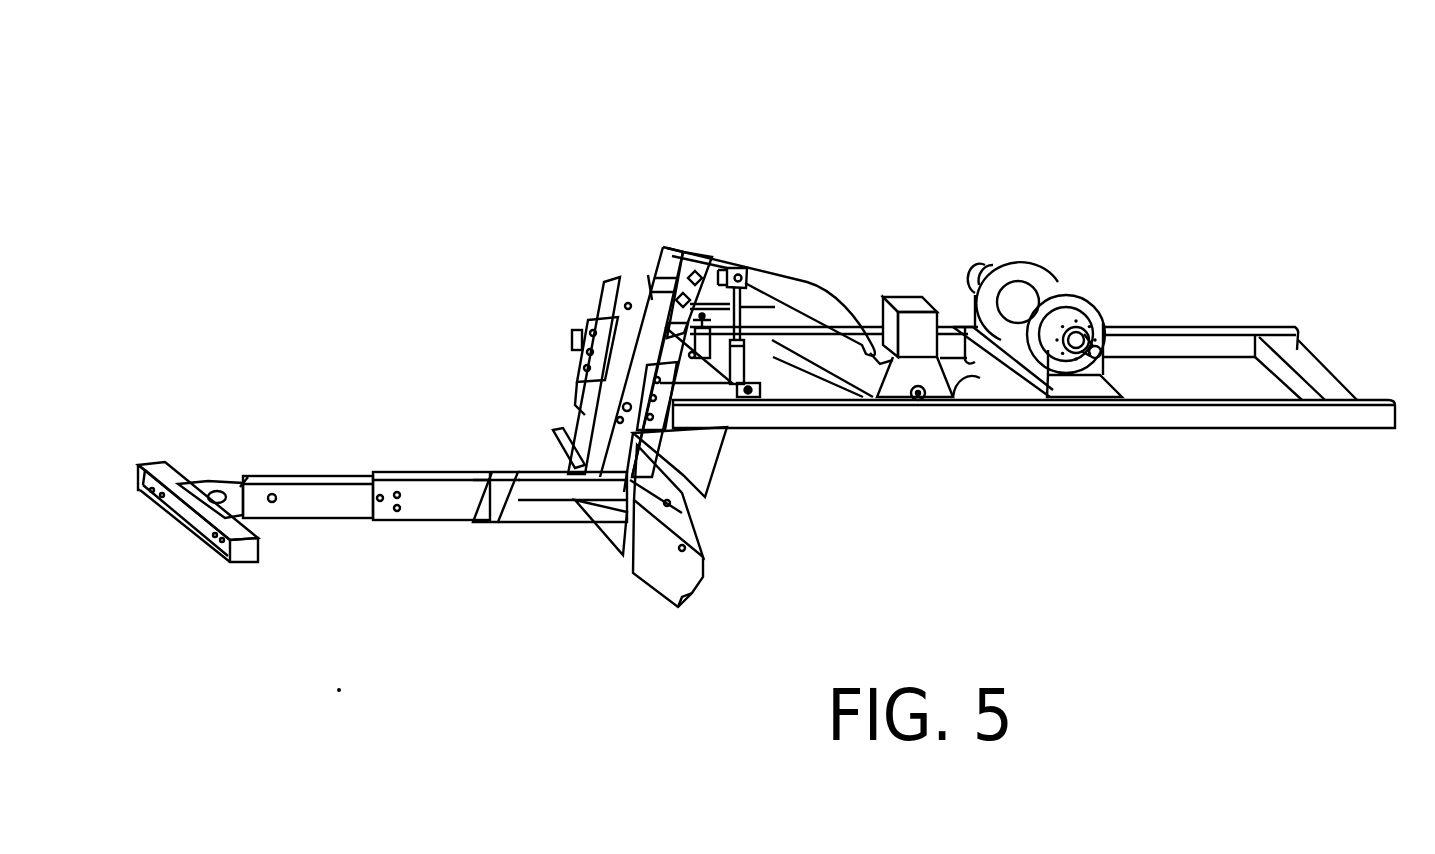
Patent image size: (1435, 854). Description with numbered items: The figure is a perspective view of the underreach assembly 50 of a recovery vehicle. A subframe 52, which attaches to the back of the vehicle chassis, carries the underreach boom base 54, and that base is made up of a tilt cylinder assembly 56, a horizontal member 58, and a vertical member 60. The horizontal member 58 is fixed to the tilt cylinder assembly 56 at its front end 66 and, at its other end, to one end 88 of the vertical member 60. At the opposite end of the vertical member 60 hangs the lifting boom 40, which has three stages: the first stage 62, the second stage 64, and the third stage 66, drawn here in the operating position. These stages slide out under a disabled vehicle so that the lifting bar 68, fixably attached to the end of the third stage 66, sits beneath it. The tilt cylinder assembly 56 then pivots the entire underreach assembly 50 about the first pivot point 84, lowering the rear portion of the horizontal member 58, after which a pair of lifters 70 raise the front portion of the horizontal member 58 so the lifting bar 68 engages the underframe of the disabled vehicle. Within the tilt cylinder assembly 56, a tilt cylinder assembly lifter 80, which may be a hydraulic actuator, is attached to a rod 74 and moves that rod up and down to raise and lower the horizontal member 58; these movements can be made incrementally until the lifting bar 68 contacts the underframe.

The lifting boom 40 is at (460, 592).
The underreach assembly 50 is at (1060, 96).
The subframe 52 is at (922, 438).
The underreach boom base 54 is at (652, 250).
The tilt cylinder assembly 56 is at (958, 368).
The horizontal member 58 is at (812, 278).
The vertical member 60 is at (640, 300).
The lifting boom first stage 62 is at (523, 455).
The lifting boom second stage 64 is at (404, 455).
The lifting boom third stage 66 is at (852, 316).
The lifting bar 68 is at (183, 546).
The lifters 70 is at (790, 405).
The rod 74 is at (592, 510).
The tilt cylinder assembly lifter 80 is at (921, 302).
The first pivot point 84 is at (738, 262).
The end of the vertical member 88 is at (653, 287).